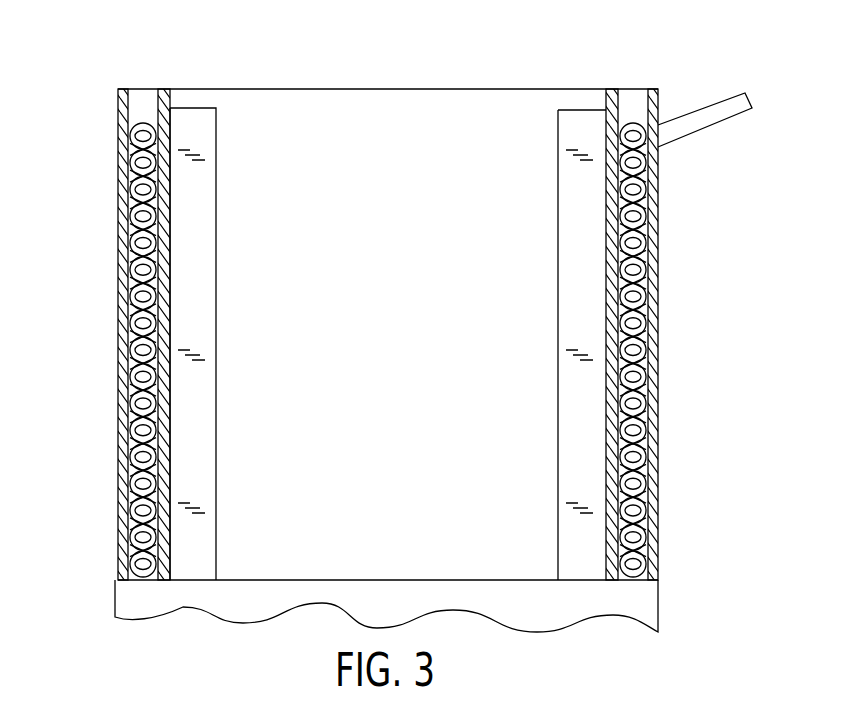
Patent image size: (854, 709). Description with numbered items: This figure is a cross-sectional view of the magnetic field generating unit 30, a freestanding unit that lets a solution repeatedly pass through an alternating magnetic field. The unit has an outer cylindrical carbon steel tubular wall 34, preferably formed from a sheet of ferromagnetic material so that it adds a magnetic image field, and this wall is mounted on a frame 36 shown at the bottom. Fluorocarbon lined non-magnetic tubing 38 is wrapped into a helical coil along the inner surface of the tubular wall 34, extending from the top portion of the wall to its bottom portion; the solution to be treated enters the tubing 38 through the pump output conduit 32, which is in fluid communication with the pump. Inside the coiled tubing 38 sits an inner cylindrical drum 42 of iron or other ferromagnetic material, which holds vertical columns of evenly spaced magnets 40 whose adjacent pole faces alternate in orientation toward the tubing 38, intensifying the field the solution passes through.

The magnetic field generating unit 30 is at (80, 254).
The pump output conduit 32 is at (706, 100).
The outer cylindrical carbon steel tubular wall 34 is at (114, 534).
The frame 36 is at (662, 597).
The fluorocarbon lined non-magnetic tubing 38 is at (143, 400).
The magnets 40 is at (194, 106).
The inner cylindrical drum 42 is at (155, 100).